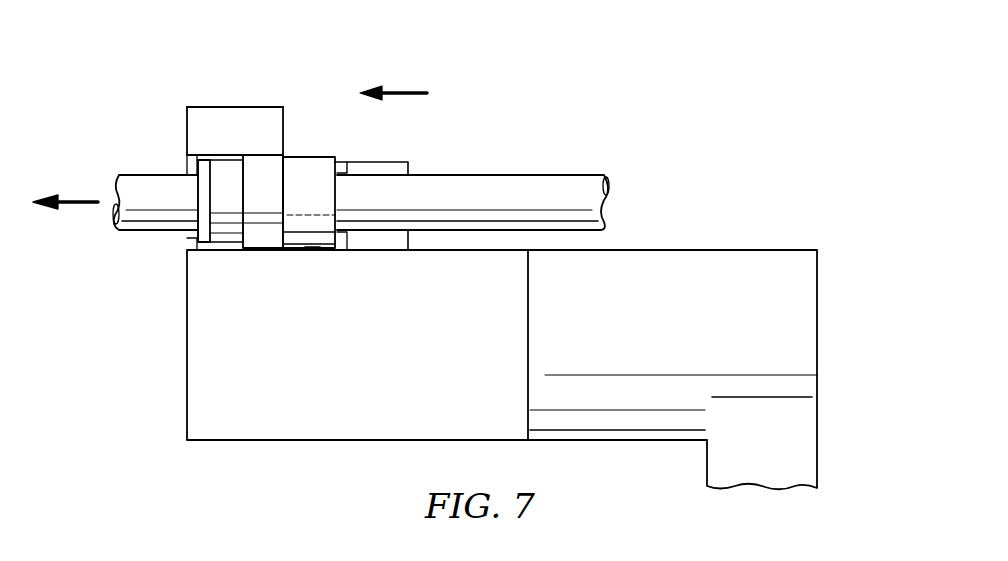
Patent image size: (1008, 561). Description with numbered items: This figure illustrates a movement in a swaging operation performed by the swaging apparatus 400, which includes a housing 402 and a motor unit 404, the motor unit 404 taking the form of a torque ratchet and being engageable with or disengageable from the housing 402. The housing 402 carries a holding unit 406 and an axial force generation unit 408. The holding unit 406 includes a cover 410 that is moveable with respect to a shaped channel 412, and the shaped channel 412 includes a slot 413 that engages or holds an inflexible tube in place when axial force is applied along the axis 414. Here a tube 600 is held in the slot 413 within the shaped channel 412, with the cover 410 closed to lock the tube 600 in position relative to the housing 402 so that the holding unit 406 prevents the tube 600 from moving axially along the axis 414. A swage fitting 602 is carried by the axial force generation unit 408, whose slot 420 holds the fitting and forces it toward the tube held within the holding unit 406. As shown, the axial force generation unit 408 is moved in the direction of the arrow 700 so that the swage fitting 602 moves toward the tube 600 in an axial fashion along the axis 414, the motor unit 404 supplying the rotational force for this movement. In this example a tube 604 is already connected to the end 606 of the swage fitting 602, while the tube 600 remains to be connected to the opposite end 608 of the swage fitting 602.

The swaging apparatus 400 is at (700, 181).
The housing 402 is at (205, 441).
The motor unit 404 is at (808, 307).
The holding unit 406 is at (215, 118).
The axial force generation unit 408 is at (395, 158).
The cover 410 is at (268, 106).
The shaped channel 412 is at (283, 155).
The slot 413 is at (185, 245).
The axis 414 is at (62, 200).
The slot 420 is at (350, 162).
The tube 600 is at (124, 175).
The swage fitting 602 is at (320, 157).
The tube 604 is at (574, 175).
The end 606 is at (343, 250).
The end 608 is at (225, 250).
The arrow 700 is at (410, 88).